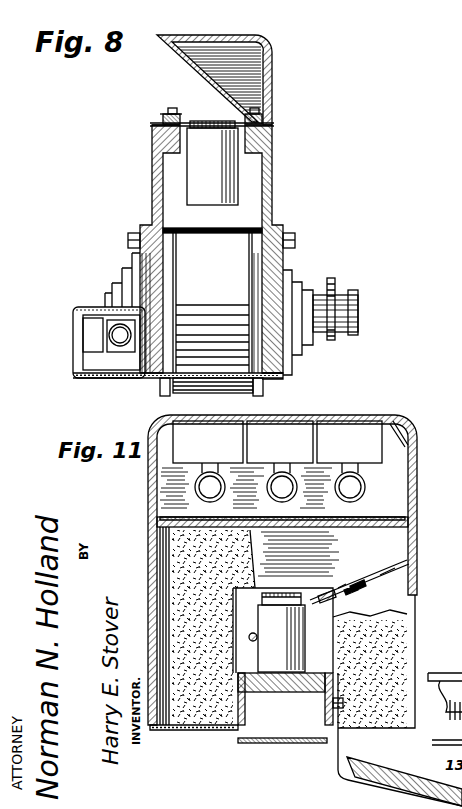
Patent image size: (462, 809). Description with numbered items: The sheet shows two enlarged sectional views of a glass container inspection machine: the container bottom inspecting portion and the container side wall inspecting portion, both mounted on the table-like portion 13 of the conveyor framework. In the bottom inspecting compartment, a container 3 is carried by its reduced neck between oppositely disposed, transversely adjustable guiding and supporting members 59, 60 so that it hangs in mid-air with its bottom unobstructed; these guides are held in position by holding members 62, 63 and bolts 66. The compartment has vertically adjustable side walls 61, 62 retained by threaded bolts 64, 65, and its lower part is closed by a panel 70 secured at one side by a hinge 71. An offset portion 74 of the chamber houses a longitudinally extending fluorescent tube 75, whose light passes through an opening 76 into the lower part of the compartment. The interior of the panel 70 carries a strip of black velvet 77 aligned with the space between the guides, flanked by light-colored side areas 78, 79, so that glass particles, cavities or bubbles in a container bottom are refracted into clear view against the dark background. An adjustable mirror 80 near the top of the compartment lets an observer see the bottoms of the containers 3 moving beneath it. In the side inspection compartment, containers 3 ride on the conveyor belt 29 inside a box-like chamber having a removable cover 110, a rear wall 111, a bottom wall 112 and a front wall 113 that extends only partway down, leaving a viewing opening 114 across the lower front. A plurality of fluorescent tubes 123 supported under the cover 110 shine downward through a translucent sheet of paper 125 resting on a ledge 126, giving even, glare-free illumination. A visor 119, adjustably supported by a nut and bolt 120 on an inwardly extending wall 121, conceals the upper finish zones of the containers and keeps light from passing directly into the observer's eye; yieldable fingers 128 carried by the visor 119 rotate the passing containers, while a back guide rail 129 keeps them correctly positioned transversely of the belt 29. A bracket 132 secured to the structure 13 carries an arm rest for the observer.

In FIG. 8, the container 3 is at (212, 163).
In FIG. 11, the container 3 is at (281, 632).
In FIG. 11, the table-like portion 13 is at (262, 702).
In FIG. 11, the conveyor belt 29 is at (303, 690).
In FIG. 8, the guiding and supporting member 59 is at (270, 124).
In FIG. 8, the guiding and supporting member 60 is at (154, 125).
In FIG. 8, the side wall 61 is at (273, 186).
In FIG. 8, the side wall 62 is at (155, 183).
In FIG. 8, the holding member 63 is at (160, 115).
In FIG. 8, the threaded bolt 64 is at (295, 240).
In FIG. 8, the threaded bolt 65 is at (128, 240).
In FIG. 8, the bolt 66 is at (178, 99).
In FIG. 8, the bottom panel 70 is at (115, 378).
In FIG. 8, the hinge 71 is at (286, 380).
In FIG. 8, the offset portion 74 is at (91, 339).
In FIG. 8, the fluorescent tube 75 is at (100, 335).
In FIG. 8, the opening 76 is at (148, 379).
In FIG. 8, the black velvet strip 77 is at (186, 385).
In FIG. 8, the side area 78 is at (262, 385).
In FIG. 8, the side area 79 is at (162, 388).
In FIG. 8, the mirror 80 is at (186, 58).
In FIG. 11, the cover 110 is at (371, 415).
In FIG. 11, the rear wall 111 is at (160, 548).
In FIG. 11, the bottom wall 112 is at (178, 731).
In FIG. 11, the front wall 113 is at (418, 548).
In FIG. 11, the viewing opening 114 is at (410, 618).
In FIG. 11, the visor 119 is at (340, 590).
In FIG. 11, the nut and bolt 120 is at (362, 573).
In FIG. 11, the inwardly extending wall 121 is at (400, 570).
In FIG. 11, the fluorescent tube 123 is at (226, 497).
In FIG. 11, the translucent sheet 125 is at (192, 510).
In FIG. 11, the ledge 126 is at (157, 522).
In FIG. 11, the yieldable finger 128 is at (312, 596).
In FIG. 11, the back guide rail 129 is at (249, 637).
In FIG. 11, the bracket 132 is at (341, 739).